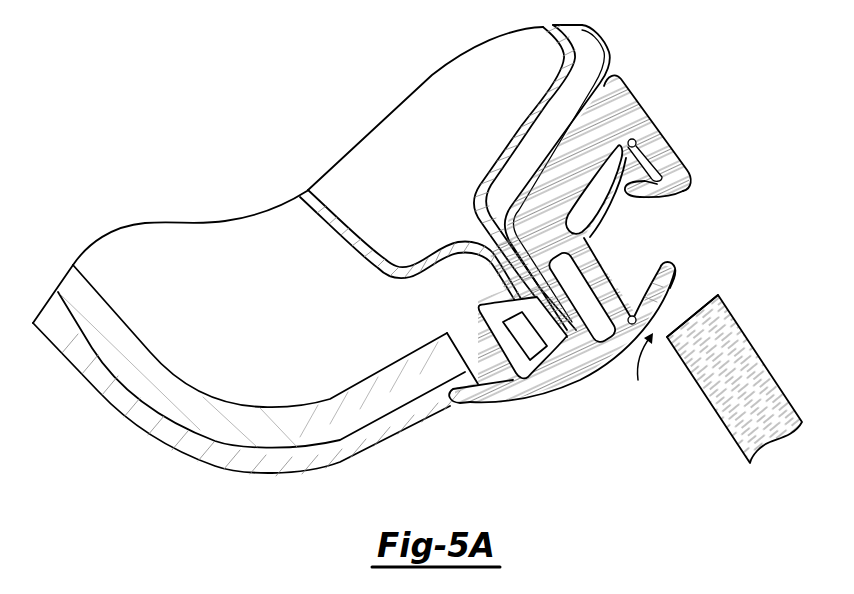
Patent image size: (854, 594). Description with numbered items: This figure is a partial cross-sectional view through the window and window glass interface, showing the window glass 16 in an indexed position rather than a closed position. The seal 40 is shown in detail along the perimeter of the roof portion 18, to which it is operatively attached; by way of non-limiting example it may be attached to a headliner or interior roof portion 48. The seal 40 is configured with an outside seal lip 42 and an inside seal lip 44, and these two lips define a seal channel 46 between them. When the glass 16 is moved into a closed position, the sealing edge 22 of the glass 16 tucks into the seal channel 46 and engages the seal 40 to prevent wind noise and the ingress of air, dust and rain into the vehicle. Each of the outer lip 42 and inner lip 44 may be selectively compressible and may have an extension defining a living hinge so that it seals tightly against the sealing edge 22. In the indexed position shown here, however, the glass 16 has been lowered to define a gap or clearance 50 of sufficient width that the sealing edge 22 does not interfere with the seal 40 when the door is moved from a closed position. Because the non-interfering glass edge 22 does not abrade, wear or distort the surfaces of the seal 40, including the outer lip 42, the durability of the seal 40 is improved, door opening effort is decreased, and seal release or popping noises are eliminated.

The window glass 16 is at (763, 377).
The roof portion 18 is at (598, 38).
The sealing edge 22 is at (703, 302).
The seal 40 is at (633, 83).
The outside seal lip 42 is at (683, 165).
The inside seal lip 44 is at (672, 283).
The seal channel 46 is at (628, 256).
The interior roof portion 48 is at (405, 432).
The gap or clearance 50 is at (639, 369).